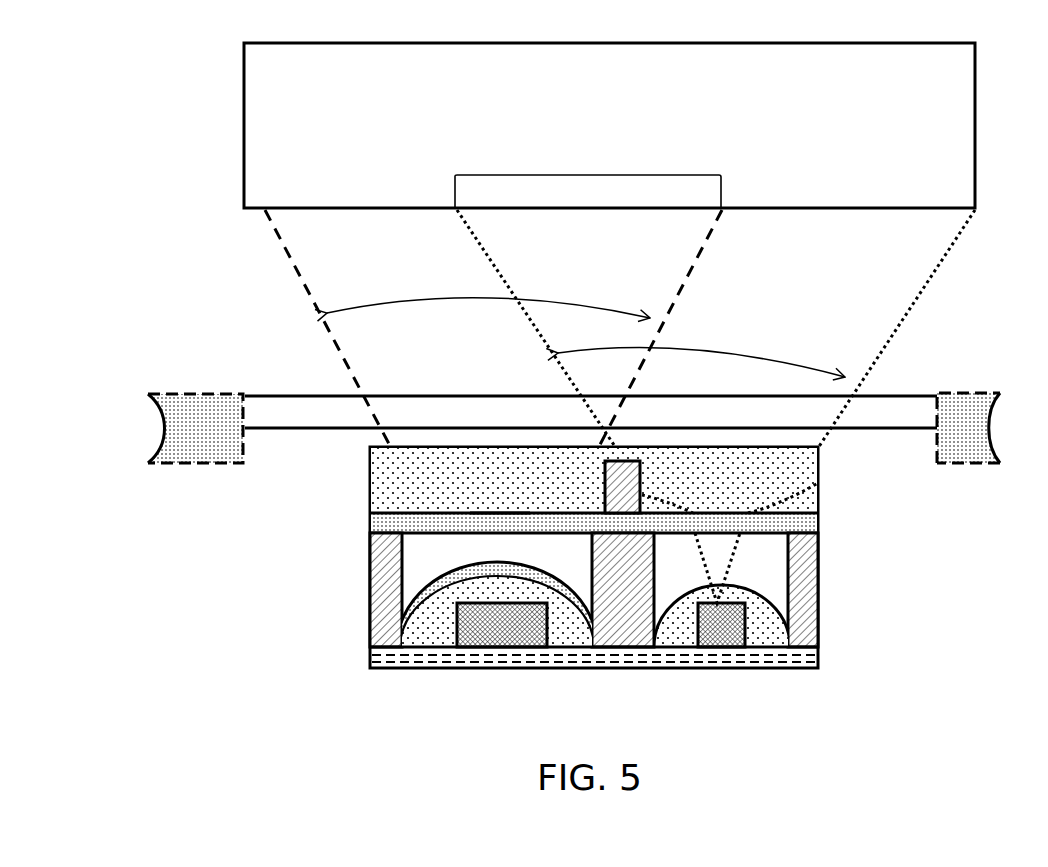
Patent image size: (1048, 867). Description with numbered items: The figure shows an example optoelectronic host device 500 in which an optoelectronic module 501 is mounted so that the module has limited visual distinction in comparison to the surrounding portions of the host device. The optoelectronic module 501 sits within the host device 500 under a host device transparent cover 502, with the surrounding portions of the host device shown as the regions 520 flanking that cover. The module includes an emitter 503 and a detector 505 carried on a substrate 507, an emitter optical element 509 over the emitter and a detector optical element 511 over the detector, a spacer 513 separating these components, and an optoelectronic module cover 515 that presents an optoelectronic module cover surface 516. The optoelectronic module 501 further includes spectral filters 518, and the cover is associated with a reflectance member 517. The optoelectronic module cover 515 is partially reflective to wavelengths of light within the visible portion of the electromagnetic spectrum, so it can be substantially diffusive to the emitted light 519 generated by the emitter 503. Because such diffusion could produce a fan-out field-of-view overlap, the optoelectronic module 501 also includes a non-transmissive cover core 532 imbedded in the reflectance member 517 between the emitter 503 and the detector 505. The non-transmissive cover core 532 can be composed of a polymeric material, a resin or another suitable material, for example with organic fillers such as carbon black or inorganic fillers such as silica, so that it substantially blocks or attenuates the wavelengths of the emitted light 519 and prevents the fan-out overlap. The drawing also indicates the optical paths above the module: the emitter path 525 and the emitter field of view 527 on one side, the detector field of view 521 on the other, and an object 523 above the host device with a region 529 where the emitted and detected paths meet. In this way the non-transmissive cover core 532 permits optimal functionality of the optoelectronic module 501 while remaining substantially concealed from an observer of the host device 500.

The host device 500 is at (146, 365).
The optoelectronic module 501 is at (297, 698).
The host device transparent cover 502 is at (297, 418).
The emitter 503 is at (730, 633).
The detector 505 is at (480, 632).
The substrate 507 is at (382, 661).
The emitter optical element 509 is at (760, 592).
The detector optical element 511 is at (418, 635).
The spacer 513 is at (803, 567).
The optoelectronic module cover 515 is at (385, 472).
The optoelectronic module cover surface 516 is at (498, 508).
The reflectance member 517 is at (808, 523).
The spectral filters 518 is at (443, 573).
The emitted light 519 is at (907, 315).
The housing 520 is at (173, 452).
The detector field of view 521 is at (716, 352).
The target object 523 is at (363, 104).
The emitted light ray 525 is at (382, 200).
The emitter field of view 527 is at (378, 303).
The illuminated region 529 is at (543, 173).
The non-transmissive cover core 532 is at (620, 488).